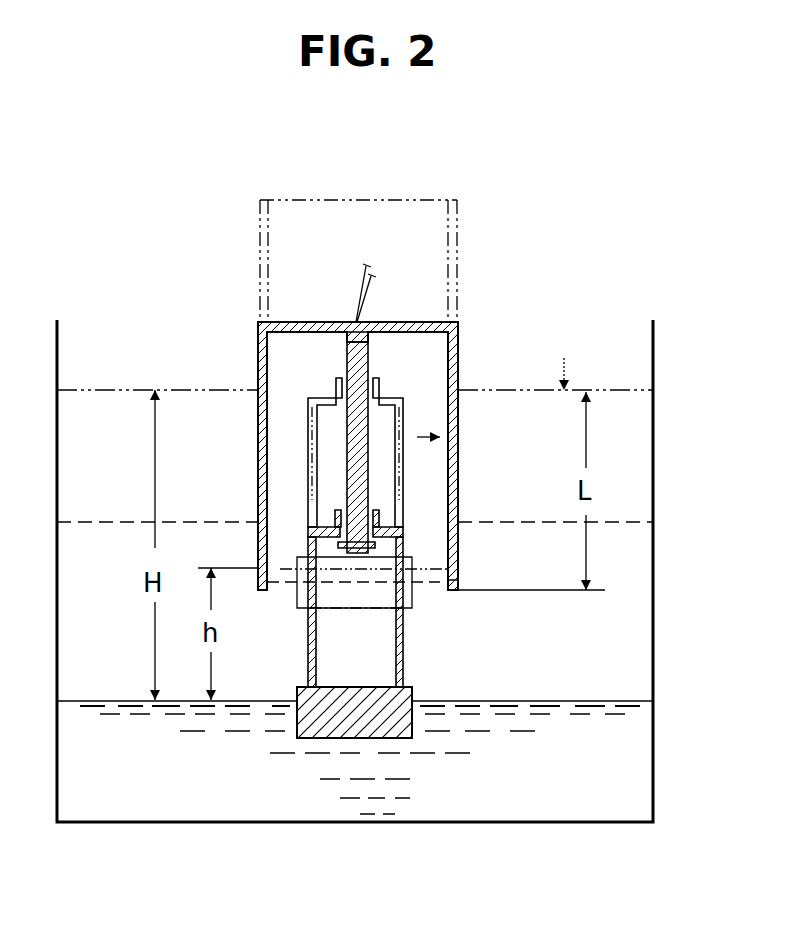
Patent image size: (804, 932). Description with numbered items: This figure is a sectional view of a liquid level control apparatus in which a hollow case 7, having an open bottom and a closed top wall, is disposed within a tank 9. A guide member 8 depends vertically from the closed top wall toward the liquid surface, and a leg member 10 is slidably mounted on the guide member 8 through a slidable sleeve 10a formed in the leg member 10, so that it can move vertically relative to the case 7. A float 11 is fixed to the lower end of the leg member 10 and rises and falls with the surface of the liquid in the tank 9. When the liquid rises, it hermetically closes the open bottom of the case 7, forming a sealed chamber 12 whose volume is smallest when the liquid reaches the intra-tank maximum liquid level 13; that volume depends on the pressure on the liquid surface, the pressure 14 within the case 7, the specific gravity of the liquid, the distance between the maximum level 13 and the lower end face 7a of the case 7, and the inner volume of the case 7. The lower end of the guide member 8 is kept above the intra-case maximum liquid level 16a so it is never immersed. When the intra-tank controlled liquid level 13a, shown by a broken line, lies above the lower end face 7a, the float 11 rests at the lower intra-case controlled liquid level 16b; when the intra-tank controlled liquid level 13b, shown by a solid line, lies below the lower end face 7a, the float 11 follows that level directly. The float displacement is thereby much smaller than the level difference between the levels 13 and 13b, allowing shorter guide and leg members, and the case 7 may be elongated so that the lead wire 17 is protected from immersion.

The hollow case 7 is at (459, 372).
The lower end face of the case 7a is at (453, 592).
The guide member 8 is at (370, 345).
The tank 9 is at (653, 482).
The leg member 10 is at (404, 656).
The slidable sleeve 10a is at (378, 516).
The float 11 is at (355, 733).
The sealed chamber 12 is at (425, 460).
The intra-tank maximum liquid level 13 is at (600, 392).
The intra-tank controlled liquid level 13a is at (620, 528).
The intra-tank controlled liquid level 13b is at (607, 708).
The pressure within the case 14 is at (442, 425).
The intra-case maximum liquid level 16a is at (452, 553).
The intra-case controlled liquid level 16b is at (291, 583).
The lead wire 17 is at (358, 290).